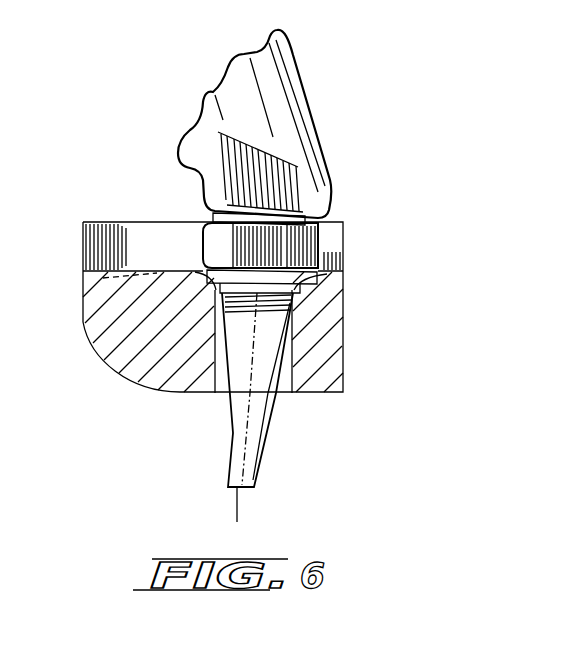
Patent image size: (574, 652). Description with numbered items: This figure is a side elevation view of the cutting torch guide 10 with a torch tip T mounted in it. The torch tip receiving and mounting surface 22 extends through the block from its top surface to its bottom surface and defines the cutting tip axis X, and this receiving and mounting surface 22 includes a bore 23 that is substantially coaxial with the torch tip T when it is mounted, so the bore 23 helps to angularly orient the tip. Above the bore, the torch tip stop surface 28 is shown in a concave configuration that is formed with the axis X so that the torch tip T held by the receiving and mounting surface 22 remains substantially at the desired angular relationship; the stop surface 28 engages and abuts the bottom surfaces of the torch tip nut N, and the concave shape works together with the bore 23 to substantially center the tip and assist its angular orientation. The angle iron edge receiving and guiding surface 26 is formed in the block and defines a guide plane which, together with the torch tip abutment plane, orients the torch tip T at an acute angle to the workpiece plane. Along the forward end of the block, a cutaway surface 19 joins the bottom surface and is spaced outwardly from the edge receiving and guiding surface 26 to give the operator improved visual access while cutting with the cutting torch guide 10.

The cutting torch guide 10 is at (377, 302).
The torch tip nut N is at (207, 243).
The angle iron edge receiving and guiding surface 26 is at (347, 273).
The cutaway surface 19 is at (150, 388).
The bore 23 is at (277, 394).
The torch tip stop surface 28 is at (316, 289).
The torch tip receiving and mounting surface 22 is at (307, 390).
The torch tip T is at (233, 408).
The cutting tip axis X is at (240, 500).